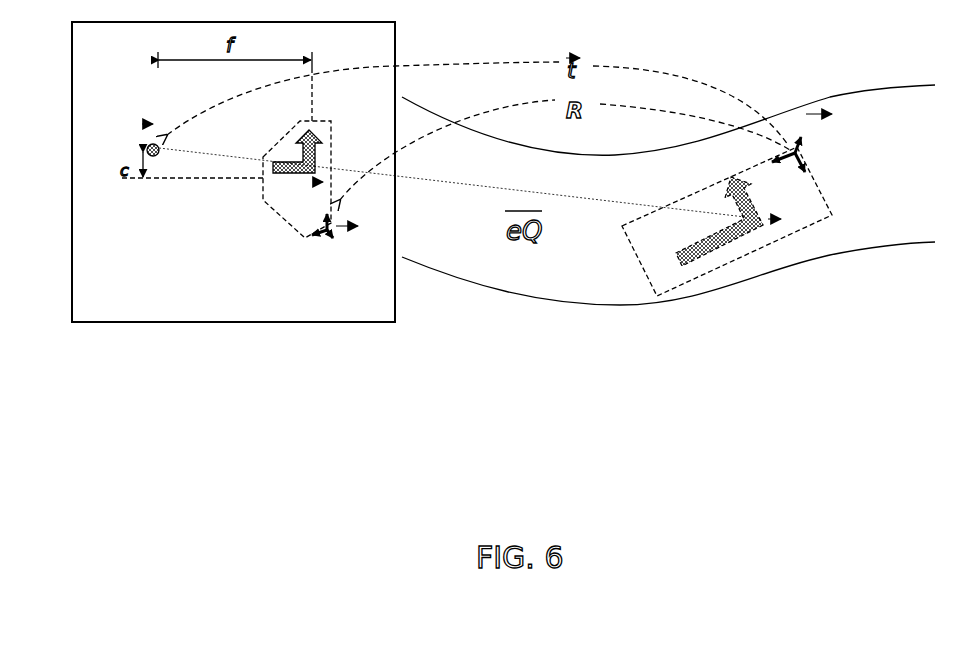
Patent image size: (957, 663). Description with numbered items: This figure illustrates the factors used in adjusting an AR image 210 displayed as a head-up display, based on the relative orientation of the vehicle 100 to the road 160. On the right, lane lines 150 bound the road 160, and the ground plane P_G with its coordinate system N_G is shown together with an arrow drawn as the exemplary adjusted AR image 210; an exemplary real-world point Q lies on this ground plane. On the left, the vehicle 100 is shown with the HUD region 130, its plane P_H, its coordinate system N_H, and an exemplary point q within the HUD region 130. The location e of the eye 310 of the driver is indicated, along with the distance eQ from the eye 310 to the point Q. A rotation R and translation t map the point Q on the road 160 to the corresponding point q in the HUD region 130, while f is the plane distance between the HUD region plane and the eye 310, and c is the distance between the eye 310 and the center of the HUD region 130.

The vehicle 100 is at (234, 319).
The HUD region 130 is at (282, 217).
The lane lines 150 is at (845, 92).
The road 160 is at (936, 122).
The AR image 210 is at (740, 254).
The eye 310 is at (157, 162).